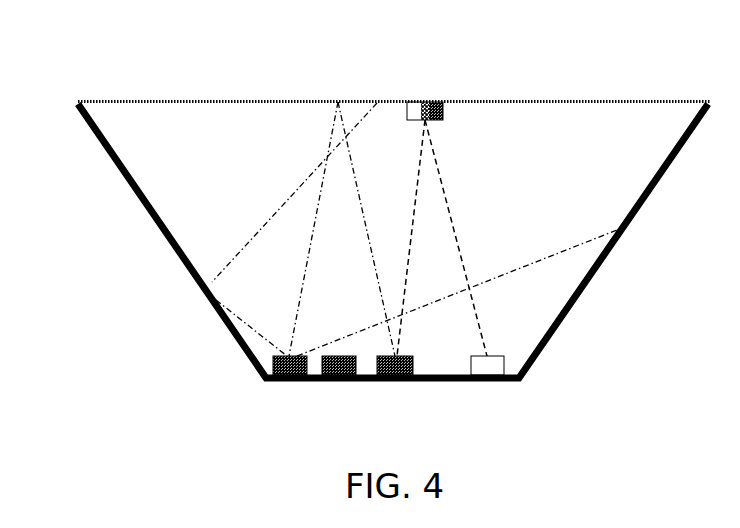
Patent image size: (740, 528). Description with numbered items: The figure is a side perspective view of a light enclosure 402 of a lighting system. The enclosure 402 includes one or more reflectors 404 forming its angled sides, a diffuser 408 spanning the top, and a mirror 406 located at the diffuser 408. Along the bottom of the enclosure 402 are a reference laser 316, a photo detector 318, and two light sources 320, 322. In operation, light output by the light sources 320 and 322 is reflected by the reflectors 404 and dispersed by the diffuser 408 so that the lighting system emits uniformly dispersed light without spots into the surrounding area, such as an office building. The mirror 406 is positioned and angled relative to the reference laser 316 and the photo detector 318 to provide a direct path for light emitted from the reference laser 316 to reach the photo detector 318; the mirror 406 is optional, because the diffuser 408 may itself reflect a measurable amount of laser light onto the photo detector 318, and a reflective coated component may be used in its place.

The enclosure 402 is at (75, 101).
The reflectors 404 is at (174, 249).
The mirror 406 is at (443, 118).
The diffuser 408 is at (440, 101).
The reference laser 316 is at (504, 355).
The photo detector 318 is at (411, 355).
The light source 320 is at (288, 355).
The light source 322 is at (331, 355).